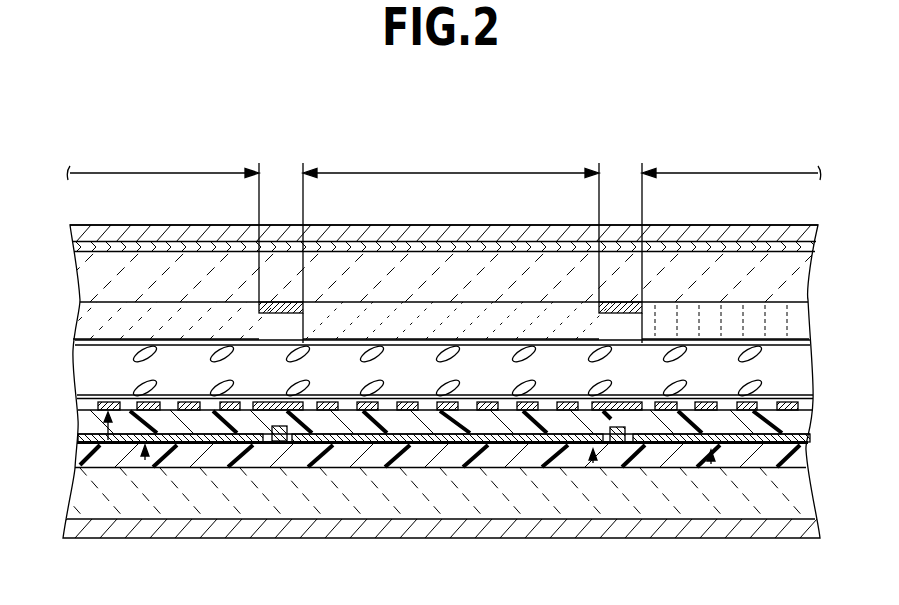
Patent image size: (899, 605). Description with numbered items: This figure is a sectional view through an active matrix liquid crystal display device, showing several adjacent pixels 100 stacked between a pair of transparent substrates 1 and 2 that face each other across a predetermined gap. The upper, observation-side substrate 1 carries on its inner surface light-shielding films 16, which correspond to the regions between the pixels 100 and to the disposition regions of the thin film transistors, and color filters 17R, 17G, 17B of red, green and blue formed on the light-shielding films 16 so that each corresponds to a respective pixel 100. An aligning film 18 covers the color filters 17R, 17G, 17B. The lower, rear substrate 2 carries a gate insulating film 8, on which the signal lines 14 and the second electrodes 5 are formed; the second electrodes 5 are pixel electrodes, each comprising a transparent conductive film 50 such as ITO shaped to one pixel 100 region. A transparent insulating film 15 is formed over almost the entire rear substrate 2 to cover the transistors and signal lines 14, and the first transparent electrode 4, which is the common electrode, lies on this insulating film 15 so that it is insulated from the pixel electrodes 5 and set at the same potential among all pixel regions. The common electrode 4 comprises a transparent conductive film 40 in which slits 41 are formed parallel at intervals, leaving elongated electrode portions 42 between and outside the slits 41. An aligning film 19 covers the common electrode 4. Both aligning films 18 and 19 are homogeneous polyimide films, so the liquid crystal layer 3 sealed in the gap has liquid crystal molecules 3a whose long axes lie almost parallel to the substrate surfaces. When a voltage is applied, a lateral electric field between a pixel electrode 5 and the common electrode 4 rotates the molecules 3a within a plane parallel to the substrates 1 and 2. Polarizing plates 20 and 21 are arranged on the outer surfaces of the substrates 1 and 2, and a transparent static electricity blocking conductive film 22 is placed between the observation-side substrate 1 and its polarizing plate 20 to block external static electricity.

The transparent substrate 1 is at (780, 275).
The transparent substrate 2 is at (791, 490).
The liquid crystal layer 3 is at (788, 365).
The liquid crystal molecules 3a is at (330, 385).
The first transparent electrode 4 is at (108, 420).
The second electrodes 5 is at (145, 456).
The gate insulating film 8 is at (793, 460).
The signal lines 14 is at (280, 441).
The transparent insulating film 15 is at (793, 428).
The light-shielding films 16 is at (277, 310).
The red color filter 17R is at (156, 316).
The green color filter 17G is at (470, 320).
The blue color filter 17B is at (700, 320).
The aligning film 18 is at (183, 345).
The aligning film 19 is at (250, 395).
The polarizing plate 20 is at (762, 237).
The polarizing plate 21 is at (790, 535).
The transparent static electricity blocking conductive film 22 is at (400, 247).
The transparent conductive film 40 is at (310, 462).
The slits 41 is at (752, 448).
The elongated electrode portions 42 is at (442, 415).
The transparent conductive film 50 is at (233, 462).
The pixel 100 is at (148, 173).